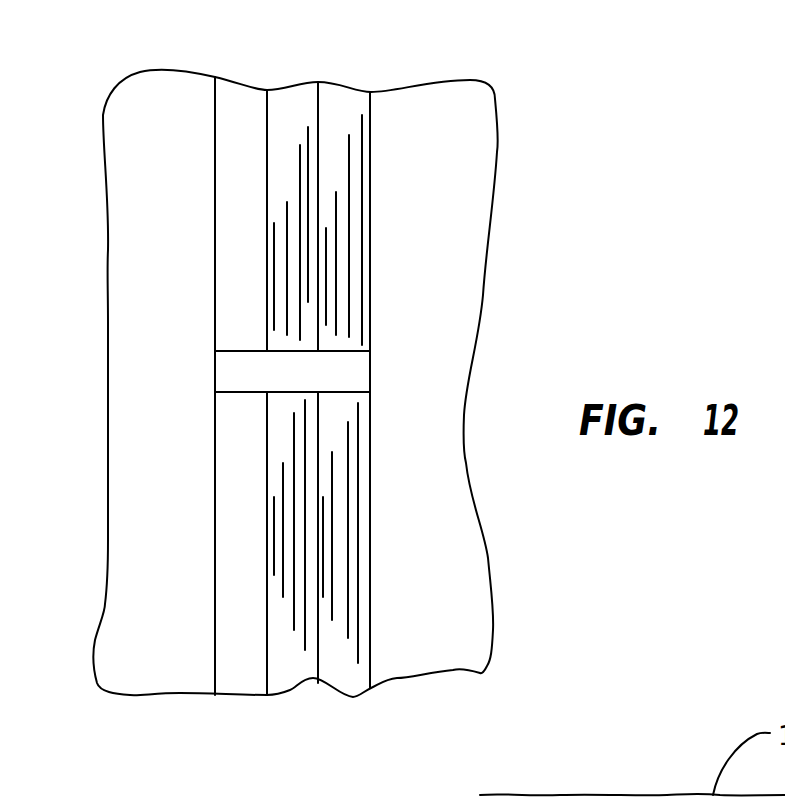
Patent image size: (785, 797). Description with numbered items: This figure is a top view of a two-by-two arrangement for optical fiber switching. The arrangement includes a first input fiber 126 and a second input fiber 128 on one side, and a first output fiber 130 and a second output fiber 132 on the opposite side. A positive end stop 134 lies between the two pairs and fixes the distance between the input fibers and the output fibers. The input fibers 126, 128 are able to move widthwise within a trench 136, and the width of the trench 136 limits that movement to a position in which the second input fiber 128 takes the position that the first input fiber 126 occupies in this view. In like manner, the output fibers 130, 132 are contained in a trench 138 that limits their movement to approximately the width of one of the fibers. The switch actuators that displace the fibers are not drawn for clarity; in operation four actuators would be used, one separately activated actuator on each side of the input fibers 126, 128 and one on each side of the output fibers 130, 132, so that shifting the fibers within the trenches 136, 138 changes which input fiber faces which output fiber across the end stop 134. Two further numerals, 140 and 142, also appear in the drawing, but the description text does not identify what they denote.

The first input fiber 126 is at (289, 672).
The second input fiber 128 is at (353, 603).
The first output fiber 130 is at (292, 105).
The second output fiber 132 is at (340, 115).
The positive end stop 134 is at (353, 373).
The trench 136 is at (235, 564).
The trench 138 is at (237, 270).
The base surface 140 is at (598, 795).
The protrusion 142 is at (667, 795).